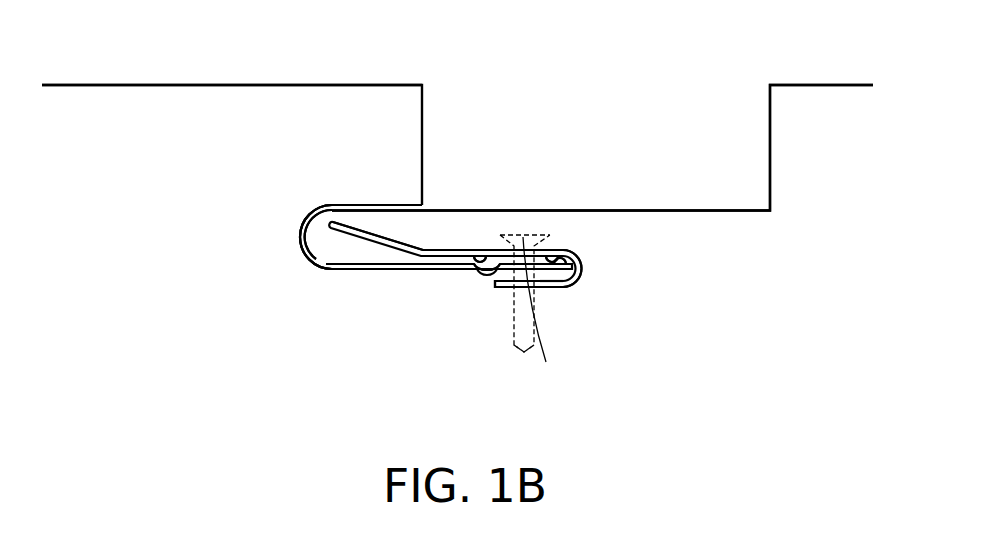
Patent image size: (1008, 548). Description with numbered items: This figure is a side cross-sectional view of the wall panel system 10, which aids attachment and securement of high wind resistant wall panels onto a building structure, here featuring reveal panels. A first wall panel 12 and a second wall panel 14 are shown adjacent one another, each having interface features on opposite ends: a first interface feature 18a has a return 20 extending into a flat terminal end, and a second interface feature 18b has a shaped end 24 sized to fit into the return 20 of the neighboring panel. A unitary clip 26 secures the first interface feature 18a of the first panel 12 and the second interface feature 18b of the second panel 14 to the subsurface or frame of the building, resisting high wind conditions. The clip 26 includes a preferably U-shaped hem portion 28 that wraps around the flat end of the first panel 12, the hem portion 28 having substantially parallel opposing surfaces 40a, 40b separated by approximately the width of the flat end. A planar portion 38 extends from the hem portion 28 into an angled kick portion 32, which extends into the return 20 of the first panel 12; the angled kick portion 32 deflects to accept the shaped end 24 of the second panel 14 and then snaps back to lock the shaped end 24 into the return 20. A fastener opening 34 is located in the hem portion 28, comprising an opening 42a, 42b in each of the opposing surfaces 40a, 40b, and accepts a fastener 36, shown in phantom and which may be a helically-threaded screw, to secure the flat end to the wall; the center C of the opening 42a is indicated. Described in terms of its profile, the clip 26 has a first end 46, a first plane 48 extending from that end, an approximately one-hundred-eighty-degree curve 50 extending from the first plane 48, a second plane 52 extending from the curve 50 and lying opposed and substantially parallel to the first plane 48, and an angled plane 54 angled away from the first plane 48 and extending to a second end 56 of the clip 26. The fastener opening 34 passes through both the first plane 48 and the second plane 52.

The wall panel system 10 is at (221, 55).
The first wall panel 12 is at (147, 86).
The second wall panel 14 is at (822, 86).
The return 20 is at (356, 204).
The second end 56 is at (307, 213).
The second interface feature 18b is at (302, 230).
The shaped end 24 is at (302, 250).
The angled kick portion 32 is at (365, 243).
The first interface feature 18a is at (440, 270).
The opposing surface 40a is at (483, 264).
The first end 46 is at (497, 288).
The unitary clip 26 is at (566, 333).
The angled plane 54 is at (402, 244).
The second plane 52 is at (456, 250).
The planar portion 38 is at (472, 250).
The opposing surface 40b is at (482, 248).
The fastener opening 34 is at (557, 250).
The opening 42b is at (583, 259).
The curve 50 is at (576, 282).
The first plane 48 is at (552, 289).
The opening 42a is at (547, 296).
The hem portion 28 is at (515, 290).
The fastener 36 is at (513, 356).
The center of the opening C is at (538, 316).